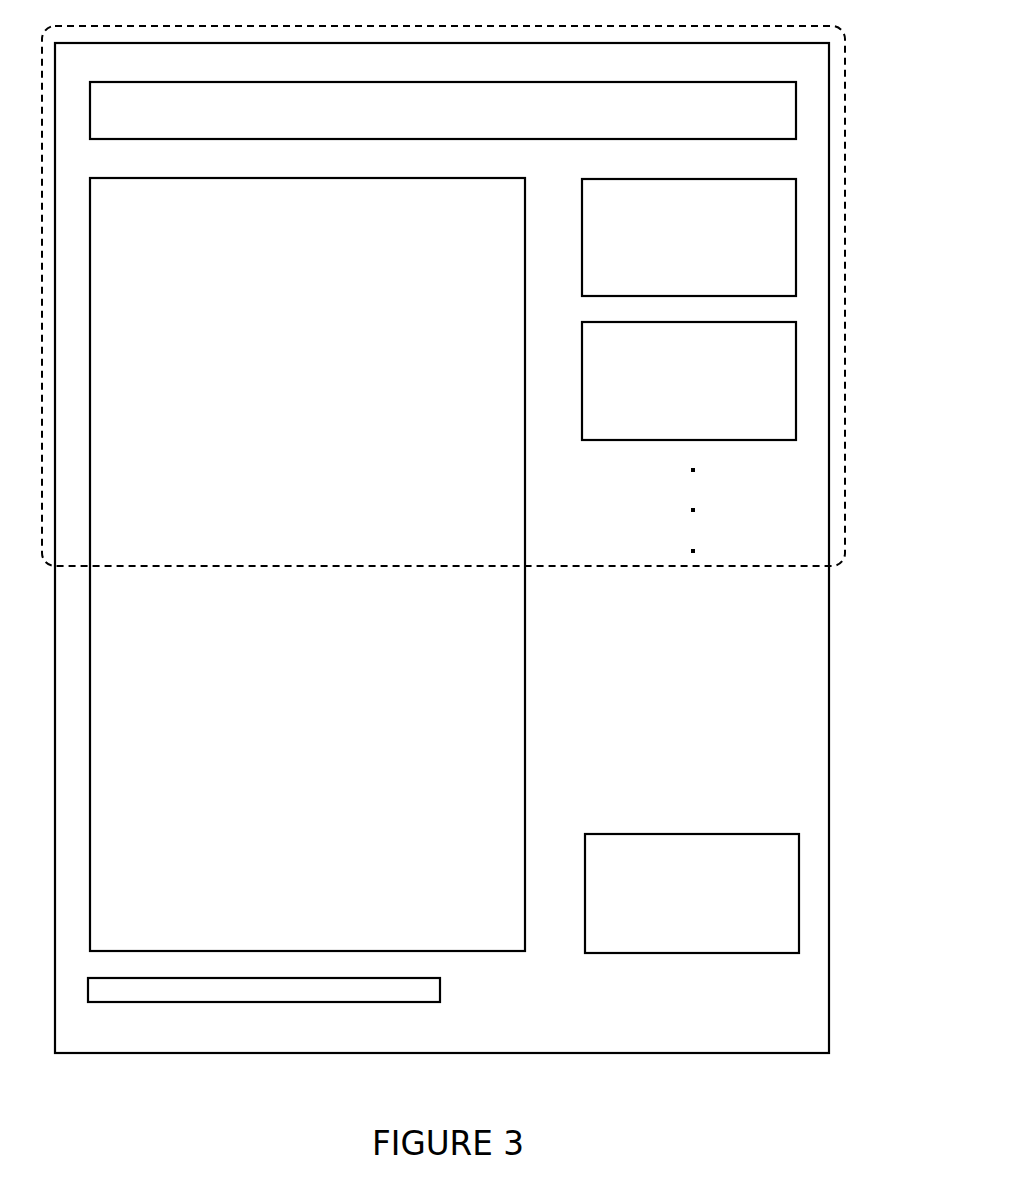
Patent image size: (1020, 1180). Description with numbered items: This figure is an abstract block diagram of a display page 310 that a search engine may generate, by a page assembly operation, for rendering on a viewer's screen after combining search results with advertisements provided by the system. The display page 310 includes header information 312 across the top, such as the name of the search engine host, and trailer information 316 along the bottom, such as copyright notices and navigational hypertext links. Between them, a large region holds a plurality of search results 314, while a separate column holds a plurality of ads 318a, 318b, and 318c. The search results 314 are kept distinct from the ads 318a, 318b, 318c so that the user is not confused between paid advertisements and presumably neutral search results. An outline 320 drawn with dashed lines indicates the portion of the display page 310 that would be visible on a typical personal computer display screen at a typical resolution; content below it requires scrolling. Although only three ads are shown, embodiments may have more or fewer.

The display page 310 is at (440, 1053).
The header information 312 is at (448, 82).
The search results 314 is at (526, 700).
The trailer information 316 is at (441, 991).
The ad 318a is at (692, 180).
The ad 318b is at (692, 322).
The ad 318c is at (694, 833).
The outline 320 is at (815, 566).